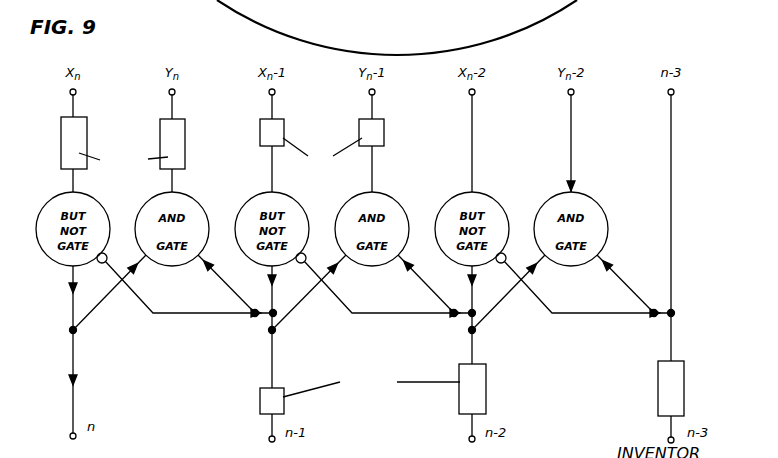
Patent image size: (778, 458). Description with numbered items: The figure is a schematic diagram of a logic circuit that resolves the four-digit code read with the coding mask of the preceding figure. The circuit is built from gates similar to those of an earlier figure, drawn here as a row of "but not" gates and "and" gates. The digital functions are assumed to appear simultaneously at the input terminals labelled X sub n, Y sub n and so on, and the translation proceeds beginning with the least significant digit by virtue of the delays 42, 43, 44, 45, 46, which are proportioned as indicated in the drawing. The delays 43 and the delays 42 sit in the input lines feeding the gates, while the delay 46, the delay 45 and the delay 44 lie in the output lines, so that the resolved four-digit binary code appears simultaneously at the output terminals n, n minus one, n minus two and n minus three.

The delay 42 is at (281, 126).
The delay 43 is at (84, 129).
The delay 44 is at (665, 391).
The delay 45 is at (463, 401).
The delay 46 is at (280, 404).